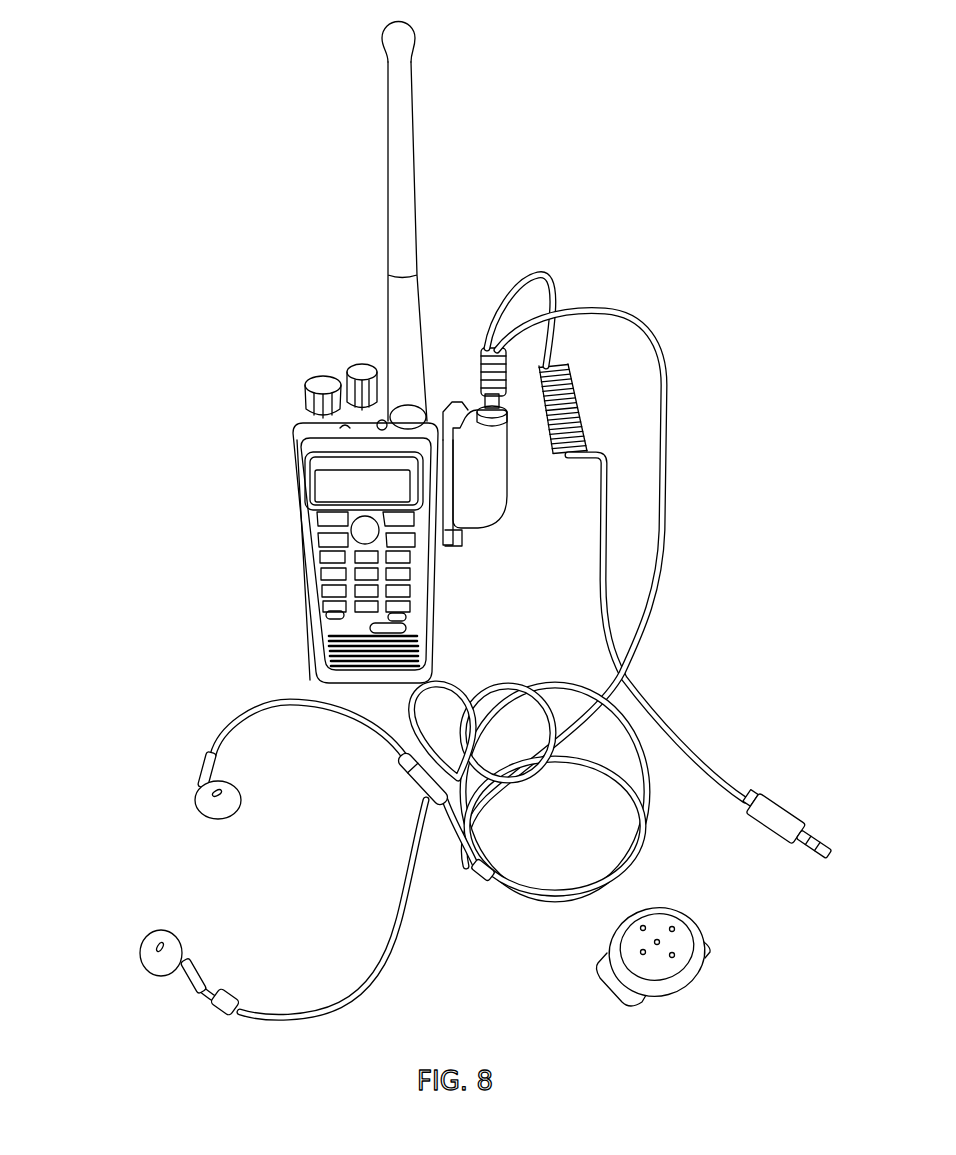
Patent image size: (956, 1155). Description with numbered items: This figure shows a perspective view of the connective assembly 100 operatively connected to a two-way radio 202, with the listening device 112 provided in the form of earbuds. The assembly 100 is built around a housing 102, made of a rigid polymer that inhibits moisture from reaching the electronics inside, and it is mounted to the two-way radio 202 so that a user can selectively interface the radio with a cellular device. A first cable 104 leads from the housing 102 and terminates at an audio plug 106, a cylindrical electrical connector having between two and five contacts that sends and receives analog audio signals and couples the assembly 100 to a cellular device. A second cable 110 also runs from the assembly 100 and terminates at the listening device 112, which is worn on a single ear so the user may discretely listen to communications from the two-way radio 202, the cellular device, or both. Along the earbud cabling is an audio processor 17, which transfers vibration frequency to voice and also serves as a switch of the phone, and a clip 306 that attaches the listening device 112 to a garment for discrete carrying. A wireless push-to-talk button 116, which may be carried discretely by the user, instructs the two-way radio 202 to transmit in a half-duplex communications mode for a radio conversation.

The connective assembly 100 is at (668, 215).
The housing 102 is at (487, 497).
The first cable 104 is at (668, 723).
The audio plug 106 is at (780, 815).
The second cable 110 is at (398, 923).
The listening device 112 is at (153, 940).
The push-to-talk button 116 is at (680, 980).
The audio processor 17 is at (227, 992).
The two-way radio 202 is at (223, 592).
The clip 306 is at (400, 767).